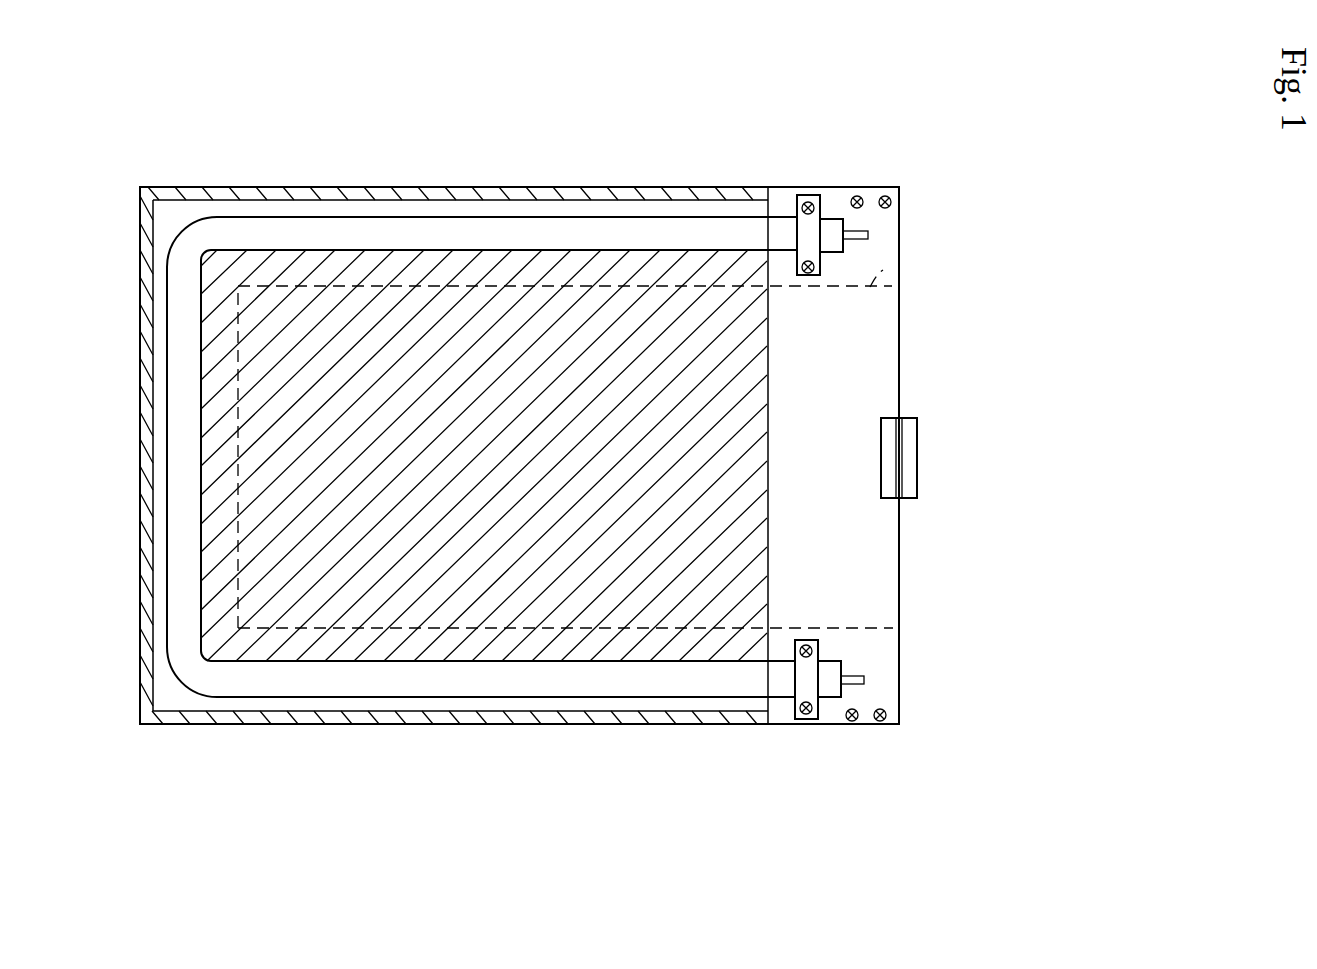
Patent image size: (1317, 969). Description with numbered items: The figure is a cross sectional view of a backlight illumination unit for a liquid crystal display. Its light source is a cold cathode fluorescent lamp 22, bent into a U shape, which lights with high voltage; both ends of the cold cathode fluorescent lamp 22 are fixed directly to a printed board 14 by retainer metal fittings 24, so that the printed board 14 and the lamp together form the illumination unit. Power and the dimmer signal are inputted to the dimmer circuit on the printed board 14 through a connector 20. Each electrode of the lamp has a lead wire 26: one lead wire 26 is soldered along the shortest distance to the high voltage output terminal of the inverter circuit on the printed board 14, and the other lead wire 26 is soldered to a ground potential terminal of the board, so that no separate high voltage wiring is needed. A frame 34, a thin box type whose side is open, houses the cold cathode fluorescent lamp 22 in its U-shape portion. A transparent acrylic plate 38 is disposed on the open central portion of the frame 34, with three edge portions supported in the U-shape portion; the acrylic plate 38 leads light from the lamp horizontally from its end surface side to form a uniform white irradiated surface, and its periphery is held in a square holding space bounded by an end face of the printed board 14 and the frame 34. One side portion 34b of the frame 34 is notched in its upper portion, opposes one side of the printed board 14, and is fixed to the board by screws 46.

The printed board 14 is at (882, 585).
The connector 20 is at (910, 473).
The cold cathode fluorescent lamp 22 is at (422, 233).
The retainer metal fittings 24 is at (803, 203).
The lead wire 26 is at (868, 236).
The frame 34 is at (286, 197).
The one side portion of the frame 34b is at (883, 270).
The transparent acrylic plate 38 is at (388, 590).
The screws 46 is at (885, 196).